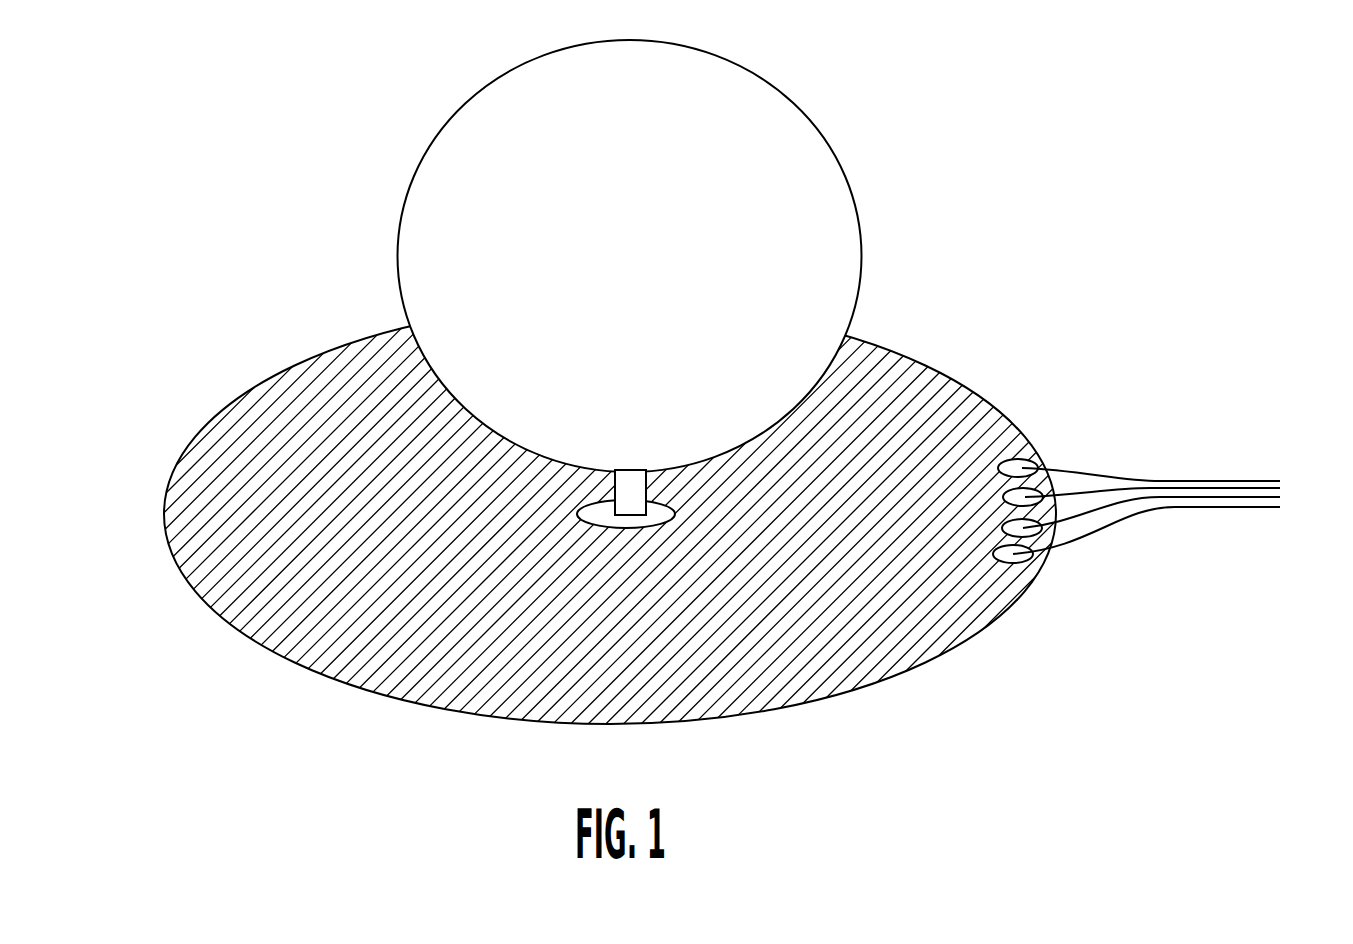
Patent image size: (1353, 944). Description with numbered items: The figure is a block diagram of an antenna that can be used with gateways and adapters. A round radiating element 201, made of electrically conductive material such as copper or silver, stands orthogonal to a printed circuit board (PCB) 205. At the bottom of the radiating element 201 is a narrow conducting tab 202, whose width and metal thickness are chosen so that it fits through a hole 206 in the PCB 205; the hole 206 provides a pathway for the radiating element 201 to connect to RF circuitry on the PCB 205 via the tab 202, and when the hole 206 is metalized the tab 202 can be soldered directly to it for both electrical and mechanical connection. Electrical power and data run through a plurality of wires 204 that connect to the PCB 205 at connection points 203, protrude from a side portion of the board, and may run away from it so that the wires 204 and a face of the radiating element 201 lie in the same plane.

The radiating element 201 is at (396, 270).
The conducting tab 202 is at (650, 515).
The connection points 203 is at (1020, 454).
The wires 204 is at (1218, 520).
The printed circuit board (PCB) 205 is at (925, 360).
The hole 206 is at (625, 532).